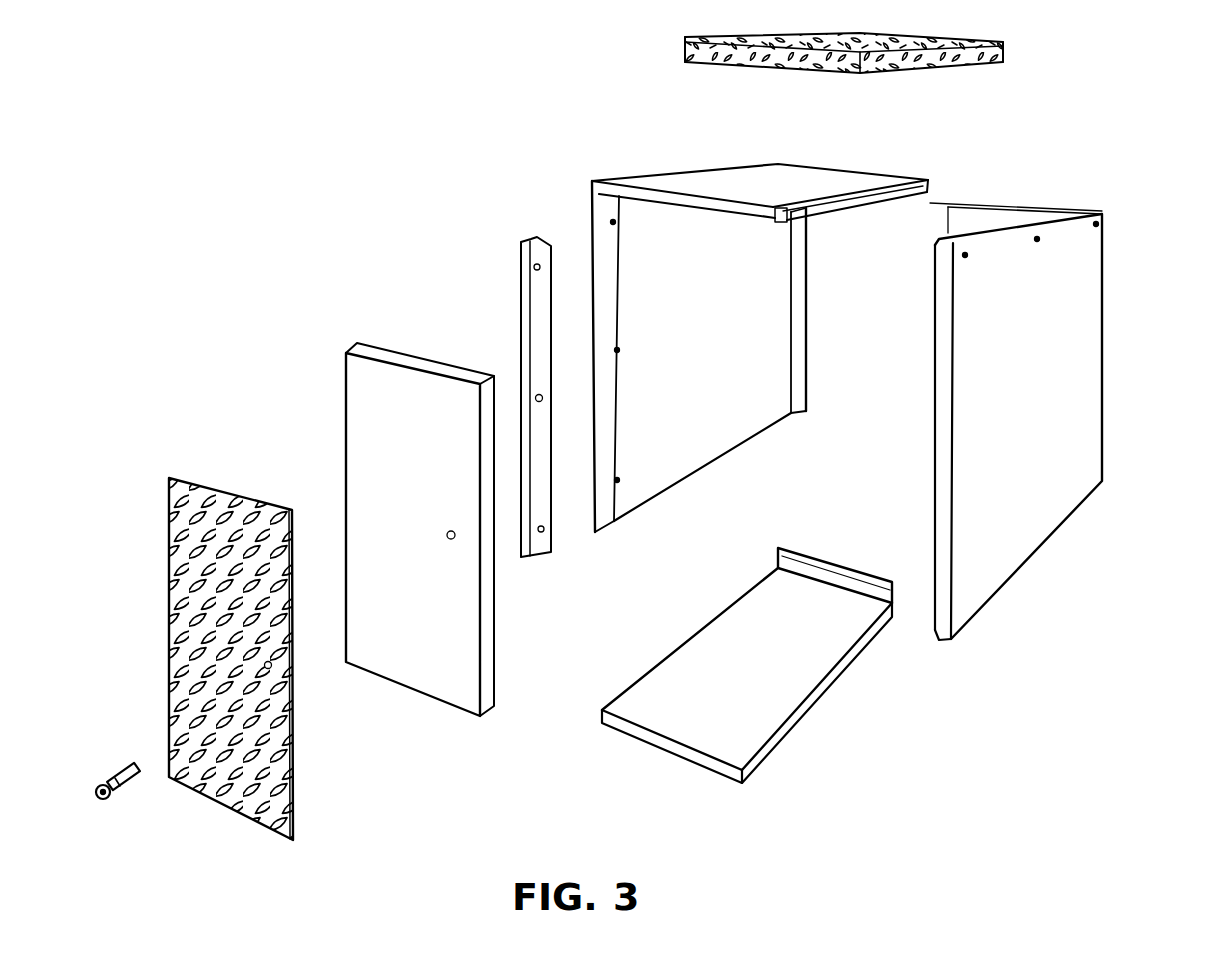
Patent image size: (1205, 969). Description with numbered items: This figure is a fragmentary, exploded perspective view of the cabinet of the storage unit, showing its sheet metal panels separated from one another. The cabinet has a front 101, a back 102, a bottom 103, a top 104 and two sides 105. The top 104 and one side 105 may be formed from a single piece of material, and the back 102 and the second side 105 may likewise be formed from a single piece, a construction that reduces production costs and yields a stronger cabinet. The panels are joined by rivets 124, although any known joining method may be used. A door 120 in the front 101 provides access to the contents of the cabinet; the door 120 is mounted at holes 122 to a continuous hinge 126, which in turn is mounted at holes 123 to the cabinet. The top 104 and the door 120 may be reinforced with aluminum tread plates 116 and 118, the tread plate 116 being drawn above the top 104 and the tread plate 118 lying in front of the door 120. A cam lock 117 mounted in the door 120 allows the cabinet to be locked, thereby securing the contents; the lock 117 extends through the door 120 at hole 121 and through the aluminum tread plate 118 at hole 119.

The front 101 is at (949, 641).
The back 102 is at (988, 220).
The bottom 103 is at (753, 678).
The top 104 is at (652, 177).
The sides 105 is at (767, 290).
The aluminum tread plate 116 is at (1003, 60).
The cam lock 117 is at (123, 767).
The aluminum tread plate 118 is at (180, 568).
The hole 119 is at (276, 668).
The door 120 is at (358, 435).
The hole 121 is at (455, 540).
The holes 122 is at (542, 401).
The holes 123 is at (619, 352).
The rivets 124 is at (1098, 226).
The continuous hinge 126 is at (535, 314).